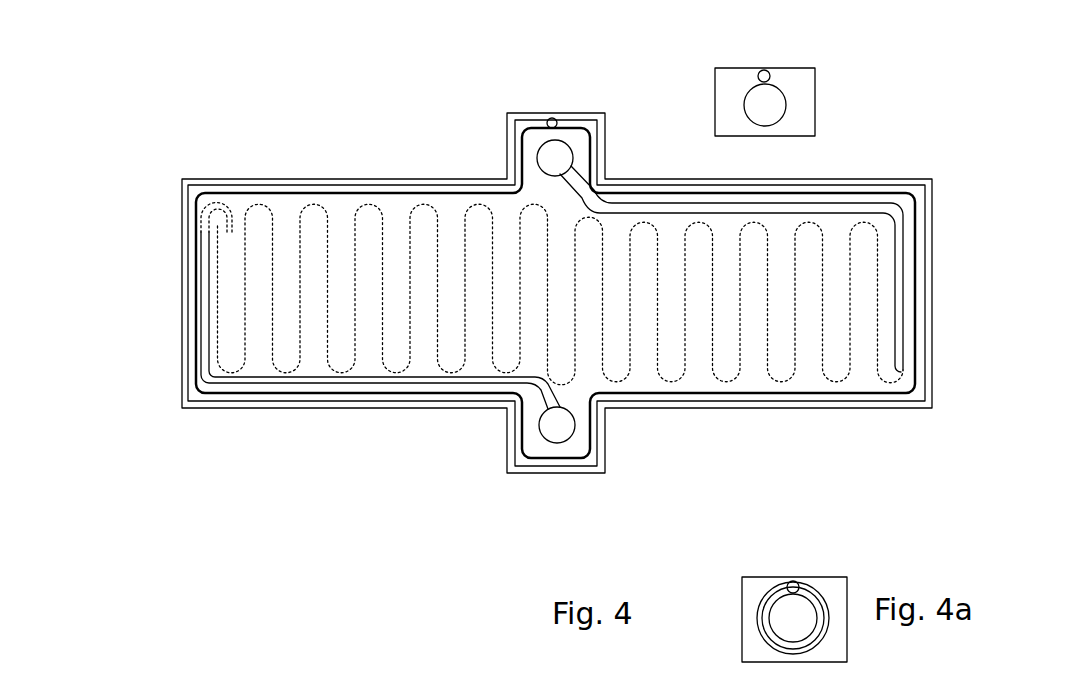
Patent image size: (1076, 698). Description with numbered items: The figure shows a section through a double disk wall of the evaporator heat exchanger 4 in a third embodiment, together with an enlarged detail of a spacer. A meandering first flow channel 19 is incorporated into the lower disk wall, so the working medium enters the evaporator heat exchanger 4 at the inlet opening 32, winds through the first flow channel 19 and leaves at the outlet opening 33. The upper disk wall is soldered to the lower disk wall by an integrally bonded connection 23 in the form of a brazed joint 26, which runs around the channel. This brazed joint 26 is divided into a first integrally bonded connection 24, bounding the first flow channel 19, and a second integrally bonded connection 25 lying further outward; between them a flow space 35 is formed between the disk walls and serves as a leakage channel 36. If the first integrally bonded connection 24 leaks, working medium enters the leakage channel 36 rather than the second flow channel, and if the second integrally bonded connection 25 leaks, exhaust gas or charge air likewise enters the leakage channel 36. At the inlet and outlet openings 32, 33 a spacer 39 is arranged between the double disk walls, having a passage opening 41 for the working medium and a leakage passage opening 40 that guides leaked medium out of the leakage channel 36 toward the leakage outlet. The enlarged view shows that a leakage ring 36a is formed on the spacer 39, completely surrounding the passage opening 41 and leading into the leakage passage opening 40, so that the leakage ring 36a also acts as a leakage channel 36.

In FIG. 4, the evaporator heat exchanger 4 is at (428, 515).
In FIG. 4, the first flow channel 19 is at (212, 305).
In FIG. 4, the integrally bonded connection 23 is at (583, 286).
In FIG. 4, the first integrally bonded connection 24 is at (583, 281).
In FIG. 4, the second integrally bonded connection 25 is at (185, 180).
In FIG. 4, the brazed joint 26 is at (583, 286).
In FIG. 4, the inlet opening 32 is at (548, 162).
In FIG. 4, the outlet opening 33 is at (558, 428).
In FIG. 4, the flow space 35 is at (552, 307).
In FIG. 4, the leakage channel 36 is at (502, 185).
In FIG. 4A, the leakage ring 36a is at (812, 600).
In FIG. 4, the spacer 39 is at (803, 90).
In FIG. 4A, the spacer 39 is at (838, 642).
In FIG. 4, the leakage passage opening 40 is at (550, 117).
In FIG. 4A, the leakage passage opening 40 is at (789, 583).
In FIG. 4, the passage opening 41 is at (752, 105).
In FIG. 4A, the passage opening 41 is at (780, 622).